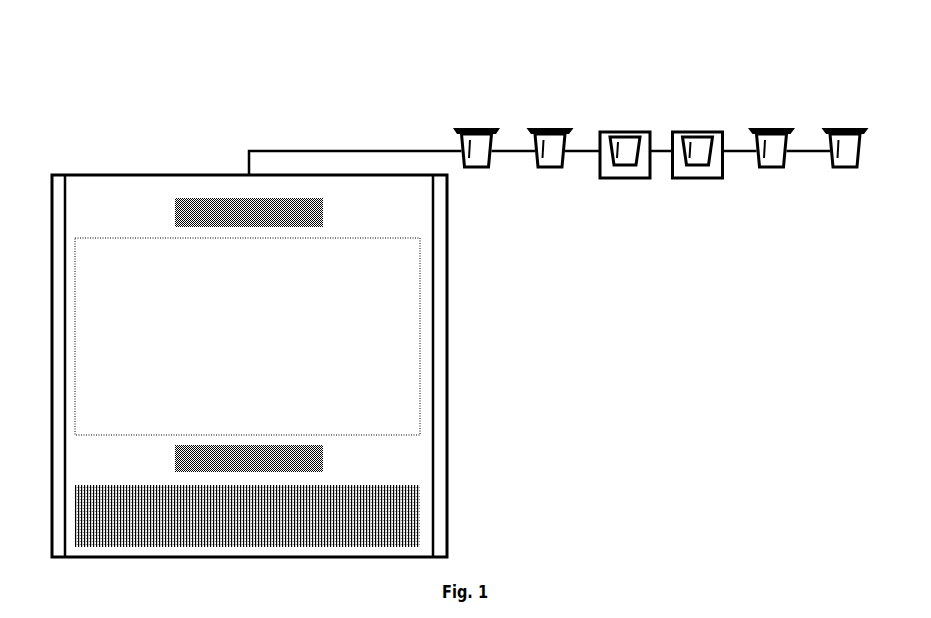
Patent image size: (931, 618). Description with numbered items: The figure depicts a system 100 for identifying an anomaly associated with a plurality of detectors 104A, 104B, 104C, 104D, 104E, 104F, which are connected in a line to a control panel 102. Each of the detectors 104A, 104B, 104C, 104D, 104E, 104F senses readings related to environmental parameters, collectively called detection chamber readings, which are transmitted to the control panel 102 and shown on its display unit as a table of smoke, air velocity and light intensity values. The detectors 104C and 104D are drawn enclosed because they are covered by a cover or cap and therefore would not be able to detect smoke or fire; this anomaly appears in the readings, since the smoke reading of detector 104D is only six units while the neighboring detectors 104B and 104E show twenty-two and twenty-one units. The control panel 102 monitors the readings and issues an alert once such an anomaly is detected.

The system 100 is at (550, 48).
The control panel 102 is at (52, 411).
The detector 104A is at (499, 124).
The detector 104B is at (572, 124).
The detector with anomaly 104C is at (647, 124).
The detector with anomaly 104D is at (719, 124).
The detector 104E is at (793, 124).
The detector 104F is at (867, 124).